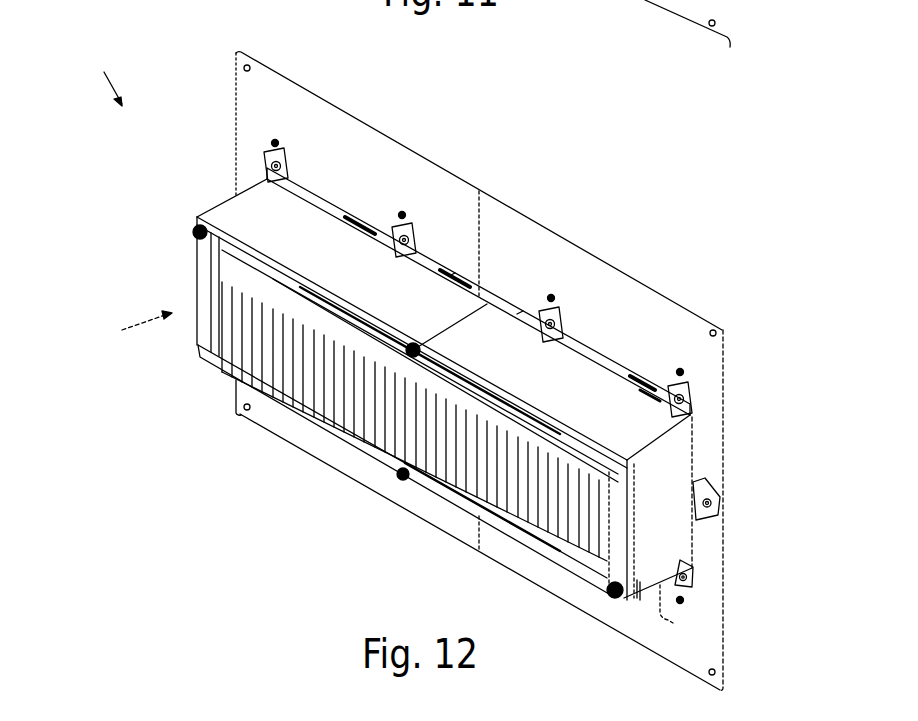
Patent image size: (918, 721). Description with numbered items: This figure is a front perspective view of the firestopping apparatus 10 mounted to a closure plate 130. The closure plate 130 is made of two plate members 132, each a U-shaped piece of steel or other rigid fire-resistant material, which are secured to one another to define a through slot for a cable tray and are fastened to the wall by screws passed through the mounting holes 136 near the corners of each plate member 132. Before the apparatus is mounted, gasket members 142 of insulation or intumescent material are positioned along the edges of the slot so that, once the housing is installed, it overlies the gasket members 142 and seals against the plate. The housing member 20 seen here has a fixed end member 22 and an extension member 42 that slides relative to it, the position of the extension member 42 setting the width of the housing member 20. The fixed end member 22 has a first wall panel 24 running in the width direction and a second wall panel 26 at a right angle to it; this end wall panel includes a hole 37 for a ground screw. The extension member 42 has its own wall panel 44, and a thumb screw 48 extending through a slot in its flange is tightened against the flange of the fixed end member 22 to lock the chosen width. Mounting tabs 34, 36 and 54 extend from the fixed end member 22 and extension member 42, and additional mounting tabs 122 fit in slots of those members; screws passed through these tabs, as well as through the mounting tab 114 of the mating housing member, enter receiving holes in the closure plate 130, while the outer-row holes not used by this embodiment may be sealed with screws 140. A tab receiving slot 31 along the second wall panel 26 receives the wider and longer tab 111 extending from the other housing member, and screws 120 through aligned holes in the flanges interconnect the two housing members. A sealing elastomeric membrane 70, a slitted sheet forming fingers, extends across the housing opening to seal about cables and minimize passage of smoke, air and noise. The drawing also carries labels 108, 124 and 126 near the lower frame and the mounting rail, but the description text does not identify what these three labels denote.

The firestopping apparatus 10 is at (104, 74).
The first housing member 20 is at (128, 329).
The fixed end member 22 is at (651, 385).
The first wall panel 24 is at (601, 390).
The second wall panel 26 is at (697, 463).
The tab receiving slot 31 is at (693, 556).
The mounting tab 34 is at (694, 399).
The mounting tab 36 is at (194, 283).
The ground screw hole 37 is at (638, 592).
The extension member 42 is at (364, 250).
The wall panel 44 is at (320, 224).
The thumb screw 48 is at (413, 352).
The mounting tab 54 is at (290, 170).
The sealing elastomeric membrane 70 is at (517, 433).
The lower frame fastener 108 is at (400, 477).
The tab 111 is at (681, 613).
The mounting tab 114 is at (693, 582).
The screws 120 is at (607, 590).
The additional mounting tabs 122 is at (413, 240).
The mounting tab 124 is at (563, 330).
The lower frame flange 126 is at (221, 282).
The closure plate 130 is at (335, 85).
The plate member 132 is at (440, 165).
The mounting holes 136 is at (246, 62).
The screws 140 is at (404, 210).
The gasket members 142 is at (452, 273).